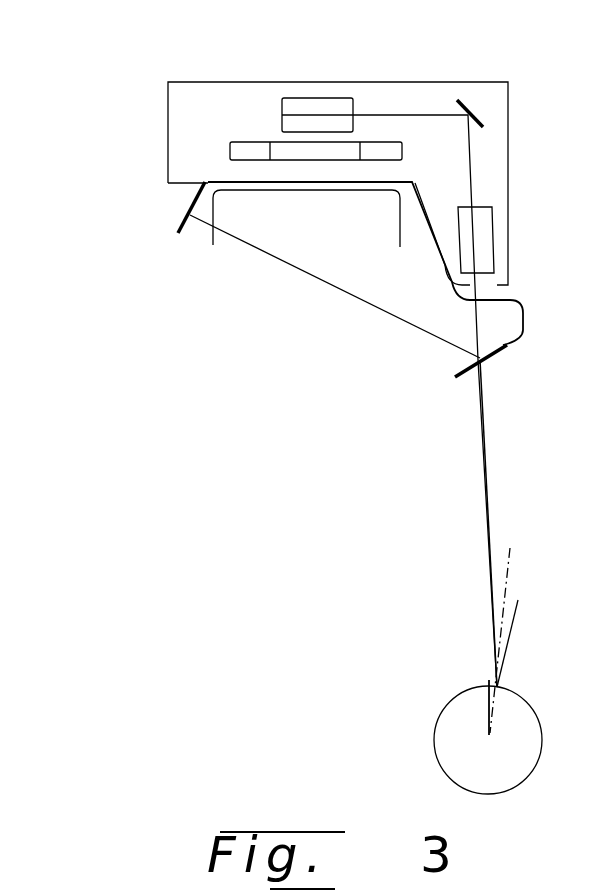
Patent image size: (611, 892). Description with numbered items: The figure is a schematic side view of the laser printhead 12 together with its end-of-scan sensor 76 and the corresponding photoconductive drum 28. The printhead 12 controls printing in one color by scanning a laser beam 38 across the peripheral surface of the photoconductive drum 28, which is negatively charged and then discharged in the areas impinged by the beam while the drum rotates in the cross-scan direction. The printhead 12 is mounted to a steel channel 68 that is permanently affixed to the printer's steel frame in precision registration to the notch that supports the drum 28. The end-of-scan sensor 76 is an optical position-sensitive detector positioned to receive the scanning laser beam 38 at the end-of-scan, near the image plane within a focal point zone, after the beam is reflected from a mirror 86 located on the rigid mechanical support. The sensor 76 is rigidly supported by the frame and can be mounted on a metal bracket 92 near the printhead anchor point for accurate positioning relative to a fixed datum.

The laser printhead 12 is at (428, 88).
The metal bracket 92 is at (217, 180).
The end-of-scan sensor 76 is at (178, 226).
The steel channel 68 is at (400, 220).
The mirror 86 is at (498, 352).
The laser beam 38 is at (484, 460).
The photoconductive drum 28 is at (512, 772).